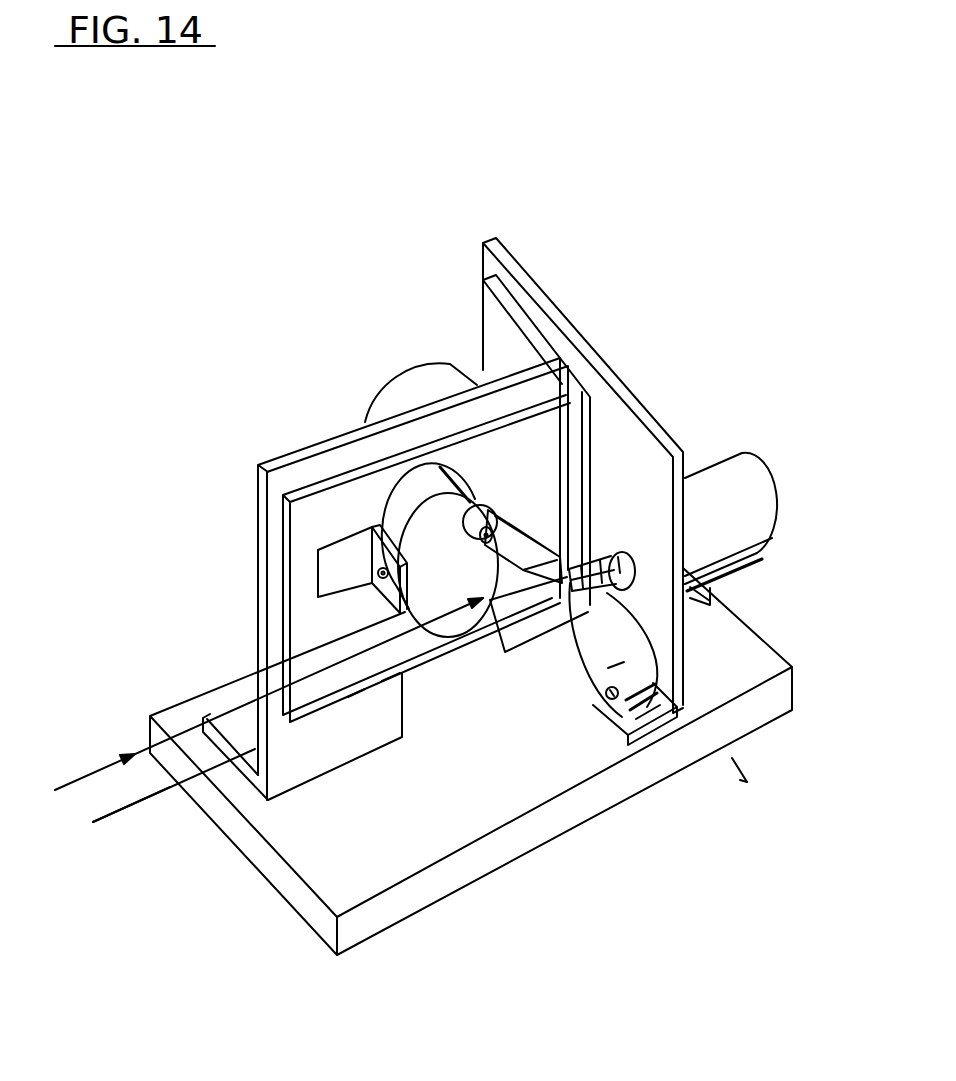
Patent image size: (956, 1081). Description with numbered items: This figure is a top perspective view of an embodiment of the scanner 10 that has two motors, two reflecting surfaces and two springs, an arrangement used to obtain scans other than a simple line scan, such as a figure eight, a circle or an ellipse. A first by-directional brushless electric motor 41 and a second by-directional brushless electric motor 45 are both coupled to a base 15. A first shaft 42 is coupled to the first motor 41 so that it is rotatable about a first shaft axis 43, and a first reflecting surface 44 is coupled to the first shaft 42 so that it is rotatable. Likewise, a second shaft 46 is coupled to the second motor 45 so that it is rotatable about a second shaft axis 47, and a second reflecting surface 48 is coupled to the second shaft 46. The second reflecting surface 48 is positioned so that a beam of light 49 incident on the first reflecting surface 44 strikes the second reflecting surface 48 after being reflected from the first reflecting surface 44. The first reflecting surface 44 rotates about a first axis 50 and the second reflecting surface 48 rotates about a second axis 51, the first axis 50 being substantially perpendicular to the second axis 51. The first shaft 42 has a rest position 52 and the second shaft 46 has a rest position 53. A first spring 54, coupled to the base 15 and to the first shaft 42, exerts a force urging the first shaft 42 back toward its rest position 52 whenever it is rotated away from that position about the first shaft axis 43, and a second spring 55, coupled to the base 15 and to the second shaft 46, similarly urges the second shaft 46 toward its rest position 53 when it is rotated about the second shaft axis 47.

The scanner 10 is at (203, 265).
The base 15 is at (688, 752).
The first by-directional brushless electric motor 41 is at (393, 410).
The first shaft 42 is at (478, 520).
The first shaft axis 43 is at (732, 760).
The first reflecting surface 44 is at (500, 568).
The second by-directional brushless electric motor 45 is at (768, 502).
The second shaft 46 is at (628, 563).
The second shaft axis 47 is at (128, 805).
The second reflecting surface 48 is at (540, 626).
The beam of light 49 is at (88, 775).
The first axis 50 is at (742, 778).
The second axis 51 is at (98, 820).
The rest position 52 is at (496, 508).
The rest position 53 is at (612, 556).
The first spring 54 is at (425, 482).
The second spring 55 is at (642, 638).